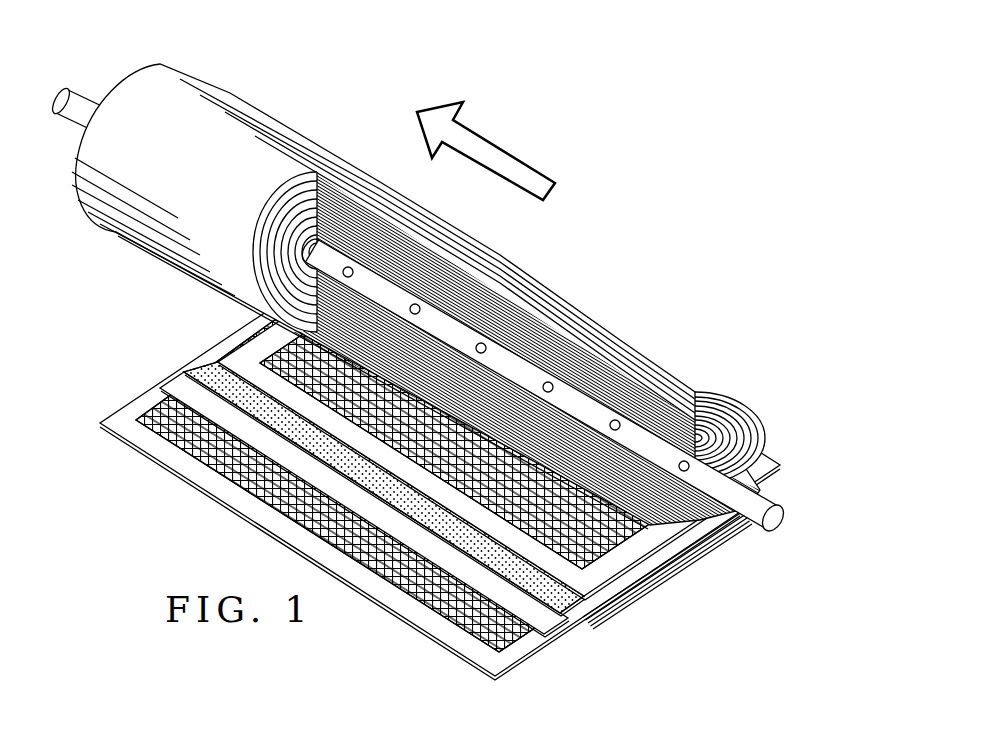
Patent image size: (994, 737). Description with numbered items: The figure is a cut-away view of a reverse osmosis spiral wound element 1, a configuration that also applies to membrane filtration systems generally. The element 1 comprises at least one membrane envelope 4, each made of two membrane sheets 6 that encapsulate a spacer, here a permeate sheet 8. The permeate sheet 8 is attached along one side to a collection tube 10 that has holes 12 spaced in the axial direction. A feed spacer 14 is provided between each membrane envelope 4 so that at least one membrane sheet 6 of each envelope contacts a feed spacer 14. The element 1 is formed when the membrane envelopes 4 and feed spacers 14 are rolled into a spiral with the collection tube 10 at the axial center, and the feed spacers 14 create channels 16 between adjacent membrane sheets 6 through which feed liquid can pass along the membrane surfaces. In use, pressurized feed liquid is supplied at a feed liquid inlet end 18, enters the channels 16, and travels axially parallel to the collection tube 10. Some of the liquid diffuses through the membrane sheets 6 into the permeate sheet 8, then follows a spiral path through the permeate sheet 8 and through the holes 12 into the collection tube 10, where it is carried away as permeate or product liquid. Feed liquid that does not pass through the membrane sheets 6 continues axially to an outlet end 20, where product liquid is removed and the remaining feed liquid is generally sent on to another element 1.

The spiral wound element 1 is at (330, 97).
The membrane envelope 4 is at (158, 385).
The membrane sheet 6 is at (242, 356).
The permeate sheet 8 is at (552, 587).
The collection tube 10 is at (571, 386).
The holes 12 is at (616, 419).
The feed spacer 14 is at (522, 634).
The channels 16 is at (442, 346).
The feed liquid inlet end 18 is at (712, 543).
The outlet end 20 is at (85, 96).